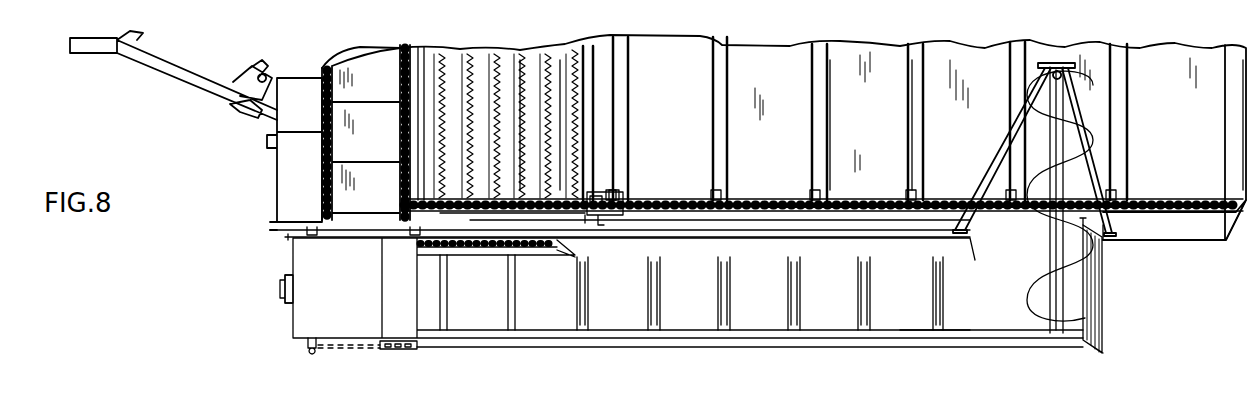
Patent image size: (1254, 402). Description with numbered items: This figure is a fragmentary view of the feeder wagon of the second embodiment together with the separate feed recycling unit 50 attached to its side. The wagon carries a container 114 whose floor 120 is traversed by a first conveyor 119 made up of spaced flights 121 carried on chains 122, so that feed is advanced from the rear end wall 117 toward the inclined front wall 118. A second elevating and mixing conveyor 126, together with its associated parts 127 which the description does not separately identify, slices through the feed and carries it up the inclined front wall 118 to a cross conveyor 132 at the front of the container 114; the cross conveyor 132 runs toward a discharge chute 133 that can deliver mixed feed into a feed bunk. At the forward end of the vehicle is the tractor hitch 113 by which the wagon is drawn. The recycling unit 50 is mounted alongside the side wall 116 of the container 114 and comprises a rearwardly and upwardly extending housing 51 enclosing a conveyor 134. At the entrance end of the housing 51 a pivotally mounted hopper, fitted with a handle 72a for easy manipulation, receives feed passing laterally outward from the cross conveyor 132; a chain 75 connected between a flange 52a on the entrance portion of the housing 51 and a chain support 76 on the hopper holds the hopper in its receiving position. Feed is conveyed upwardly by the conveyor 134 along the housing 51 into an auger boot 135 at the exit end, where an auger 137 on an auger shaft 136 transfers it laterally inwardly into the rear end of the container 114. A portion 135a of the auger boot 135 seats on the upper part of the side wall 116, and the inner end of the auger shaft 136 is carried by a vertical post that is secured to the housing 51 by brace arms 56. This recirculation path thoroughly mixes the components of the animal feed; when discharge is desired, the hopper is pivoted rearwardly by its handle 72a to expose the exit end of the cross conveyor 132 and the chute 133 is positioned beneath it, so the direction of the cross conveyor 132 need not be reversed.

The feed recycling unit 50 is at (640, 352).
The housing 51 is at (820, 350).
The flange 52a is at (405, 350).
The brace arms 56 is at (1000, 160).
The handle 72a is at (283, 290).
The chain 75 is at (358, 352).
The chain support 76 is at (308, 350).
The tractor hitch 113 is at (185, 82).
The container 114 is at (1180, 187).
The side wall 116 is at (745, 226).
The end wall 117 is at (1232, 108).
The inclined front wall 118 is at (505, 64).
The first conveyor 119 is at (740, 82).
The floor 120 is at (874, 102).
The flights 121 is at (915, 140).
The chains 122 is at (680, 200).
The second elevating and mixing conveyor 126 is at (566, 112).
The upright members 127 is at (545, 158).
The cross conveyor 132 is at (356, 62).
The discharge chute 133 is at (283, 178).
The conveyor 134 is at (905, 330).
The auger boot 135 is at (1090, 320).
The auger boot portion 135a is at (1098, 238).
The auger shaft 136 is at (1050, 258).
The auger 137 is at (1030, 296).